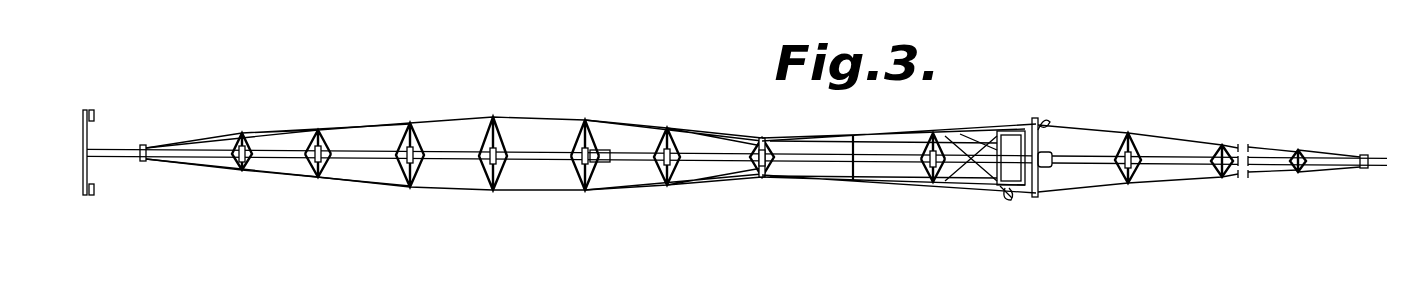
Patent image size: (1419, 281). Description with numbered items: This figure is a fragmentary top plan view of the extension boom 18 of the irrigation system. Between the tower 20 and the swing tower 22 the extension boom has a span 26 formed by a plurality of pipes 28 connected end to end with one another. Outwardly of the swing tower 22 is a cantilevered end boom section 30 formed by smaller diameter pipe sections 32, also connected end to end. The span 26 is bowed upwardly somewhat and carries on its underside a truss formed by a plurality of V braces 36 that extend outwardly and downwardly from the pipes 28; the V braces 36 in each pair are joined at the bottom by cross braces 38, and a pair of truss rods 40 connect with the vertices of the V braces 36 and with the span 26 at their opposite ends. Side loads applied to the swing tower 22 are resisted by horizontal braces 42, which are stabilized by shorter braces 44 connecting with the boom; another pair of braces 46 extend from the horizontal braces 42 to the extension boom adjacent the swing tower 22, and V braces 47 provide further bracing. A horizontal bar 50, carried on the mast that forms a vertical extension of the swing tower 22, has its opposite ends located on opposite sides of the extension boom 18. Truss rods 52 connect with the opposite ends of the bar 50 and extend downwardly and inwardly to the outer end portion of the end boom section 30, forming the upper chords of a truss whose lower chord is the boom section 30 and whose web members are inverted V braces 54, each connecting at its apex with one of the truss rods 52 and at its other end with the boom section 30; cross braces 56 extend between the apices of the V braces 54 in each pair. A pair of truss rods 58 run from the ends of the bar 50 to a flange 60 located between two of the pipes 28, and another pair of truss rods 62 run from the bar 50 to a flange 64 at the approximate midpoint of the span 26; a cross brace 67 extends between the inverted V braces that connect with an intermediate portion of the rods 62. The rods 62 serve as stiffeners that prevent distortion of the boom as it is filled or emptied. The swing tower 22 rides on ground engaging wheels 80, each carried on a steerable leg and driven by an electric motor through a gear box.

The extension boom 18 is at (711, 85).
The tower 20 is at (104, 137).
The swing tower 22 is at (1039, 114).
The span 26 is at (549, 152).
The pipes 28 is at (277, 158).
The cantilevered end boom section 30 is at (1105, 155).
The pipe sections 32 is at (1078, 156).
The V braces 36 is at (243, 134).
The cross braces 38 is at (323, 171).
The truss rods 40 is at (368, 124).
The horizontal braces 42 is at (970, 183).
The shorter braces 44 is at (982, 135).
The braces 46 is at (942, 137).
The V braces 47 is at (925, 135).
The horizontal bar 50 is at (1052, 192).
The truss rods 52 is at (1192, 139).
The inverted V braces 54 is at (1126, 185).
The cross braces 56 is at (1216, 178).
The truss rods 58 is at (1020, 131).
The flange 60 is at (928, 184).
The truss rods 62 is at (856, 134).
The flange 64 is at (600, 153).
The cross brace 67 is at (758, 143).
The ground engaging wheel 80 is at (1050, 124).